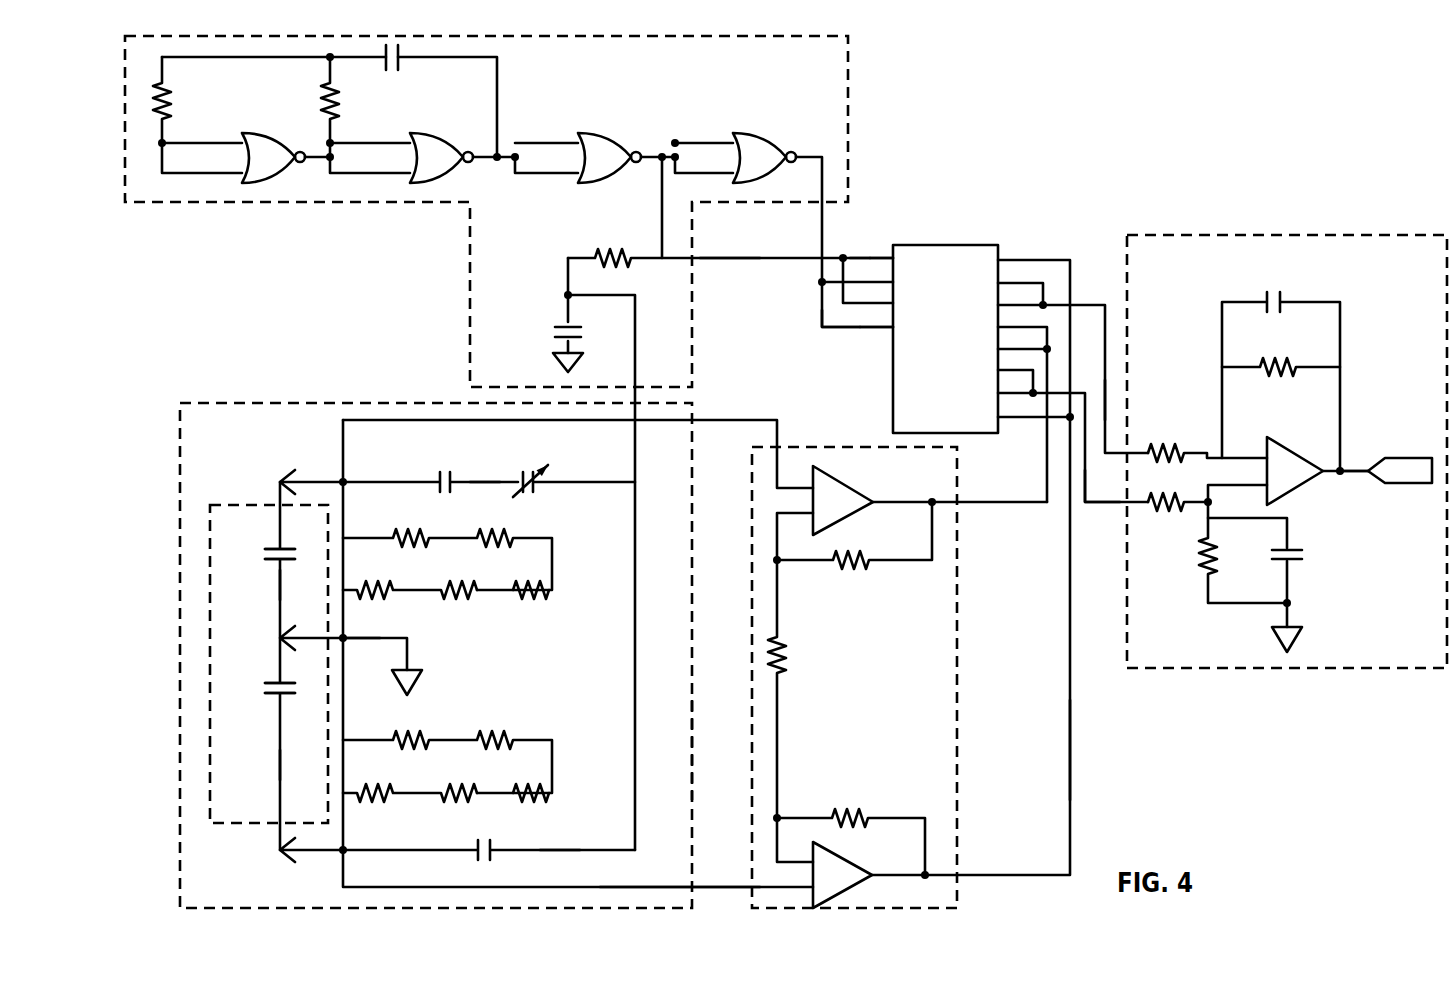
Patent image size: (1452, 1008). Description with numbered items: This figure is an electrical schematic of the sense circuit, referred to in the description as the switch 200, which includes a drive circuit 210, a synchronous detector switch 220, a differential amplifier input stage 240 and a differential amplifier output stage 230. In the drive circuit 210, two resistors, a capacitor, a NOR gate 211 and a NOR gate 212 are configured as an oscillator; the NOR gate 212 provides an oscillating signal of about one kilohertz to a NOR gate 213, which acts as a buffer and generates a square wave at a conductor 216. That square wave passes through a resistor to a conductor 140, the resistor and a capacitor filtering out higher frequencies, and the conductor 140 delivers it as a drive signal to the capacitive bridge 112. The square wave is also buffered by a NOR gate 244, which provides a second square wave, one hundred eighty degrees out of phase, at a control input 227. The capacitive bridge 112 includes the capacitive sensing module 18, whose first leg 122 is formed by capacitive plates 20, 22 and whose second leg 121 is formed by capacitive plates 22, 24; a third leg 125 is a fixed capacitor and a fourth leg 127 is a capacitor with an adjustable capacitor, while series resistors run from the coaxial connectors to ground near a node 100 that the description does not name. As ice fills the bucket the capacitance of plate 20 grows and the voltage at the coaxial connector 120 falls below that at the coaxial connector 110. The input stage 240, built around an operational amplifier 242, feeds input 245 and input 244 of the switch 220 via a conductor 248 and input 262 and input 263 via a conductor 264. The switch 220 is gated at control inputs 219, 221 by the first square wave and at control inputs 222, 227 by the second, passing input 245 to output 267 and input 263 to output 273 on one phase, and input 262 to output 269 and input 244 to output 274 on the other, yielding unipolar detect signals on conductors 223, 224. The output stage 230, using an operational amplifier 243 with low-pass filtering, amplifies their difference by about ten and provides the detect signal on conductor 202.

The switch 200 is at (1142, 140).
The drive circuit 210 is at (848, 98).
The NOR gate 211 is at (277, 135).
The NOR gate 212 is at (445, 135).
The NOR gate 213 is at (610, 135).
The NOR gate 244 is at (765, 135).
The conductor 216 is at (722, 258).
The conductor 140 is at (637, 332).
The control input 219 is at (896, 250).
The control input 222 is at (898, 256).
The synchronous detector switch 220 is at (948, 245).
The control input 227 is at (840, 327).
The control input 221 is at (892, 330).
The input 245 is at (1005, 258).
The output 267 is at (1022, 283).
The output 269 is at (1030, 305).
The input 262 is at (1028, 327).
The input 263 is at (1022, 349).
The output 273 is at (1022, 370).
The output 274 is at (1031, 405).
The conductor 223 is at (1107, 400).
The conductor 224 is at (1107, 505).
The conductor 264 is at (977, 503).
The conductor 248 is at (1070, 752).
The differential amplifier output stage 230 is at (1290, 235).
The operational amplifier 243 is at (1298, 452).
The conductor 202 is at (1358, 468).
The coaxial connector 110 is at (362, 482).
The fourth leg 127 is at (483, 482).
The ground connection 100 is at (362, 638).
The third leg 125 is at (560, 848).
The capacitive bridge 112 is at (692, 750).
The coaxial connector 120 is at (318, 852).
The capacitive sensing module 18 is at (210, 730).
The capacitive plate 24 is at (273, 548).
The capacitive plate 22 is at (273, 561).
The capacitive plate 20 is at (273, 696).
The second leg 121 is at (282, 585).
The first leg 122 is at (282, 763).
The differential amplifier input stage 240 is at (957, 752).
The operational amplifier 242 is at (845, 482).